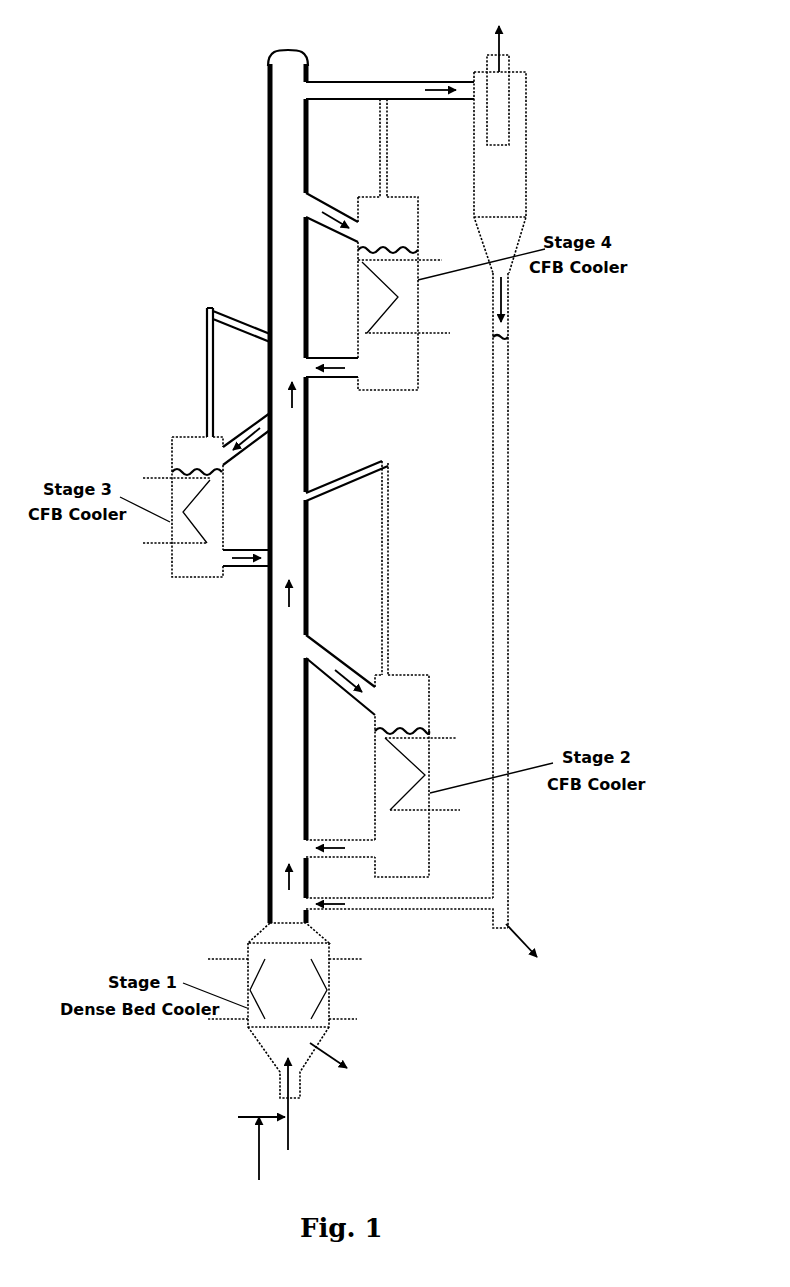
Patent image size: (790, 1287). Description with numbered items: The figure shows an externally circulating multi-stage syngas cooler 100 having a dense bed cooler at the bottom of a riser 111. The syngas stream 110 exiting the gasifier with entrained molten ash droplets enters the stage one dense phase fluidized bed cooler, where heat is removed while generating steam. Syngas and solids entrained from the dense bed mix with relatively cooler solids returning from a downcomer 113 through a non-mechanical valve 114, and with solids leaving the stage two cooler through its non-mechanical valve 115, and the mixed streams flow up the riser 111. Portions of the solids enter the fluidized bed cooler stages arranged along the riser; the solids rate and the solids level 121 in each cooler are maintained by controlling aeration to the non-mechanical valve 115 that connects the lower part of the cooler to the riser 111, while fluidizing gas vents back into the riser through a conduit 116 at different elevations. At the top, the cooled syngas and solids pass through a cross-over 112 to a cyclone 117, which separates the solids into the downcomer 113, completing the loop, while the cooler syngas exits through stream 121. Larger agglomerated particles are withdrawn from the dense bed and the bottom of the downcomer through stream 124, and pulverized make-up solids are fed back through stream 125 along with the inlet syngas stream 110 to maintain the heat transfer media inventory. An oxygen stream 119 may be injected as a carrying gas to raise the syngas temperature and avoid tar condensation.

The multi-stage syngas cooler 100 is at (257, 257).
The syngas stream 110 is at (308, 1110).
The riser 111 is at (269, 663).
The cross-over 112 is at (357, 80).
The downcomer 113 is at (509, 593).
The non-mechanical valve 114 is at (407, 910).
The non-mechanical valve 115 is at (328, 378).
The conduit 116 is at (386, 173).
The cyclone 117 is at (525, 137).
The oxygen stream 119 is at (239, 1154).
The solids level 121 is at (405, 730).
The solids withdrawal stream 124 is at (443, 1009).
The make-up solids stream 125 is at (242, 1117).